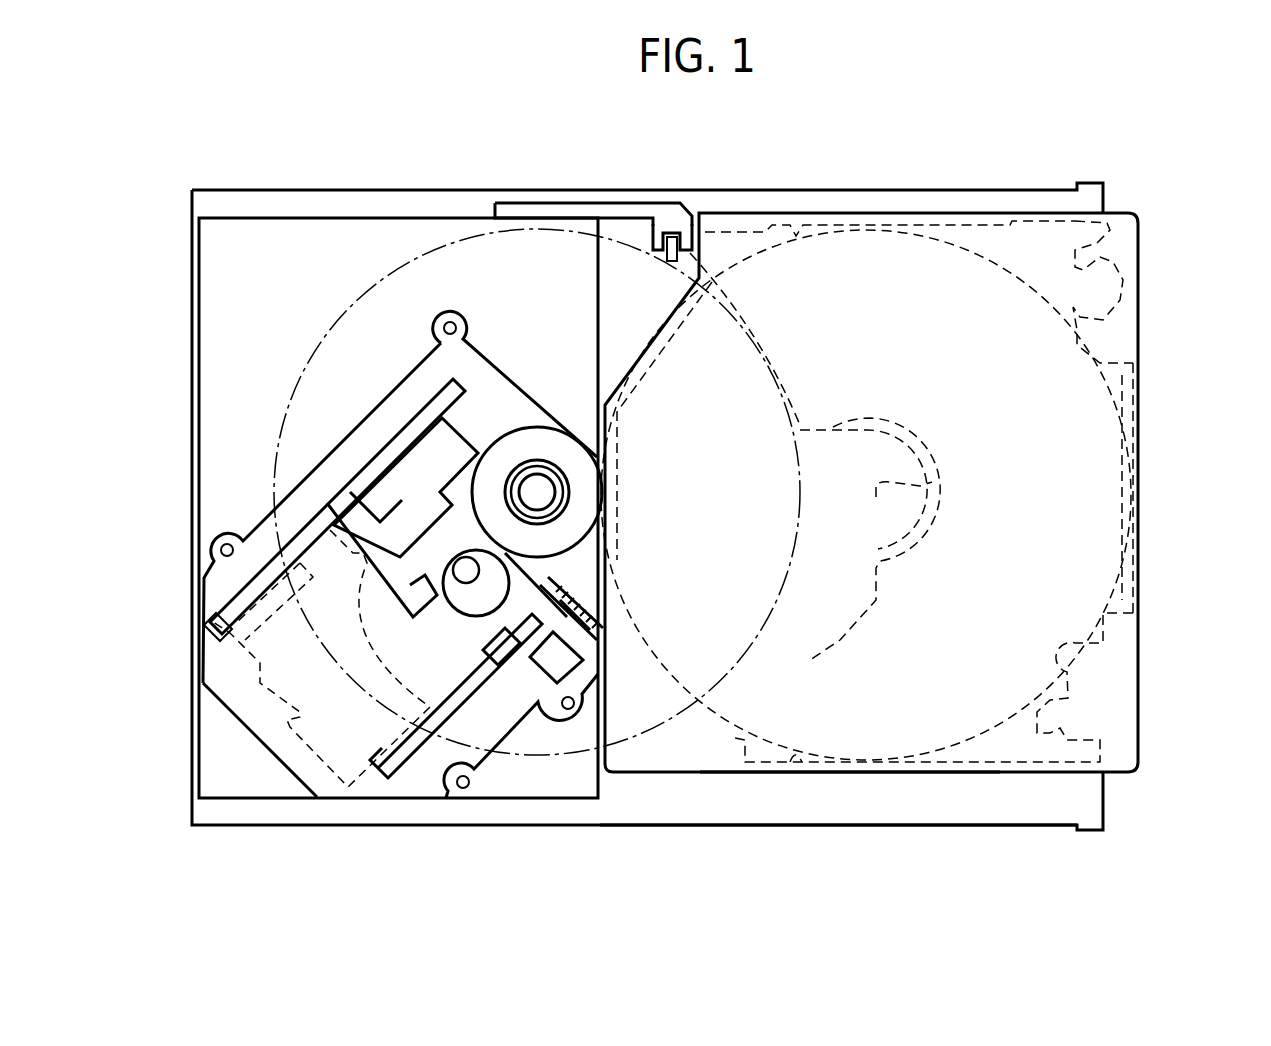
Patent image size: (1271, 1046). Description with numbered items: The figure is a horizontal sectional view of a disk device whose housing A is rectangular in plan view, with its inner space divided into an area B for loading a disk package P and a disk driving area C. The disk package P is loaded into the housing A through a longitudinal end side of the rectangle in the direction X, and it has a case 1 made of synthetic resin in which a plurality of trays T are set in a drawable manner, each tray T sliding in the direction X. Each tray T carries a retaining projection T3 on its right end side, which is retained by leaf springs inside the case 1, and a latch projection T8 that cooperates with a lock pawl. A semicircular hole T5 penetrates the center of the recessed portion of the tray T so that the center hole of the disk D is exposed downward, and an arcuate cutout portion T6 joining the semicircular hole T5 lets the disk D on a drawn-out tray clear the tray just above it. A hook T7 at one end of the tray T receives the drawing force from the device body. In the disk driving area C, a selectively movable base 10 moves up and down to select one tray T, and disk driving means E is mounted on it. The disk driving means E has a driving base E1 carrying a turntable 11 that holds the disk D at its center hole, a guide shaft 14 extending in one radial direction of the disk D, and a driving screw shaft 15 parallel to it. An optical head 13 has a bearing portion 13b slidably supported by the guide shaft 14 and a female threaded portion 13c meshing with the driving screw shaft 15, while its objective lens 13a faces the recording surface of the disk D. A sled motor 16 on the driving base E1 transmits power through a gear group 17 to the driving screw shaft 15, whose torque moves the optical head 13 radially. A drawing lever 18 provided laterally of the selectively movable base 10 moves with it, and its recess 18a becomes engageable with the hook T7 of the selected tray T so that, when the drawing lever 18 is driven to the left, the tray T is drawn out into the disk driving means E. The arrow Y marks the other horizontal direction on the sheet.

The selectively movable base 10 is at (266, 214).
The case 1 is at (1140, 333).
The turntable 11 is at (527, 442).
The optical head 13 is at (455, 448).
The objective lens 13a is at (463, 556).
The bearing portion 13b is at (318, 498).
The female threaded portion 13c is at (508, 680).
The guide shaft 14 is at (208, 625).
The driving screw shaft 15 is at (430, 762).
The sled motor 16 is at (565, 666).
The gear group 17 is at (583, 612).
The drawing lever 18 is at (587, 205).
The recess 18a is at (688, 232).
The tray T is at (1122, 377).
The retaining projection T3 is at (1117, 288).
The semicircular hole T5 is at (920, 488).
The arcuate cutout portion T6 is at (748, 350).
The hook T7 is at (672, 258).
The latch projection T8 is at (1070, 732).
The disk package P is at (1123, 660).
The disk D is at (338, 325).
The disk driving means E is at (290, 472).
The driving base E1 is at (237, 690).
The housing A is at (700, 832).
The area for loading of a disk package B is at (822, 800).
The disk driving area C is at (405, 812).
The direction X is at (1168, 488).
The lateral direction Y is at (942, 800).